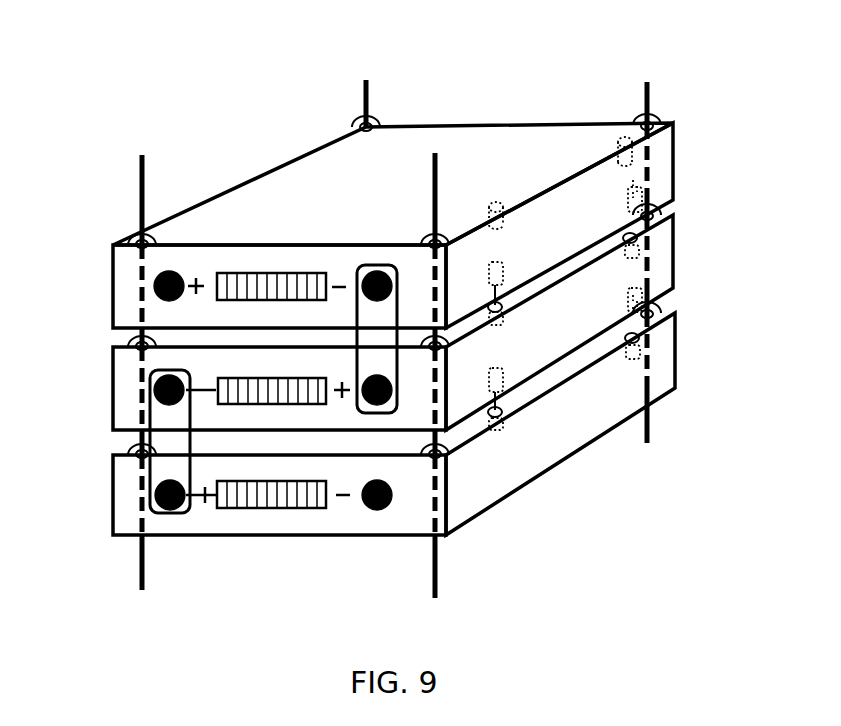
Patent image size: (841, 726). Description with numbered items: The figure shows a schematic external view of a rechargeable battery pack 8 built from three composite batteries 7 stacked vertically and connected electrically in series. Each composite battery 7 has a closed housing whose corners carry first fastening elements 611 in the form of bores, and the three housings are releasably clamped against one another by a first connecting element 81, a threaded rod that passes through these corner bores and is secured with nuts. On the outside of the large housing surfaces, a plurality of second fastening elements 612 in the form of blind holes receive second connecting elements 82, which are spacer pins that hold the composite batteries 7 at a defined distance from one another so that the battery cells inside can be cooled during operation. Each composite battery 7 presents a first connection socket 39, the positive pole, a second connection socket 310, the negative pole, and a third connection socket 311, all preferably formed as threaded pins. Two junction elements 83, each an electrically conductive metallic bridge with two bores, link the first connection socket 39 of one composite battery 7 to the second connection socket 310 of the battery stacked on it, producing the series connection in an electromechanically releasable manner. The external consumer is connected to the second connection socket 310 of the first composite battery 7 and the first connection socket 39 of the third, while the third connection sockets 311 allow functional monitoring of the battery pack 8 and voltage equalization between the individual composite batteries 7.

The composite battery 7 is at (478, 122).
The rechargeable battery pack 8 is at (208, 128).
The first connecting element 81 is at (652, 90).
The second connecting element 82 is at (650, 237).
The junction element 83 is at (167, 438).
The first connection socket 39 is at (152, 280).
The second connection socket 310 is at (370, 508).
The third connection socket 311 is at (255, 507).
The first fastening element 611 is at (652, 168).
The second fastening element 612 is at (652, 283).